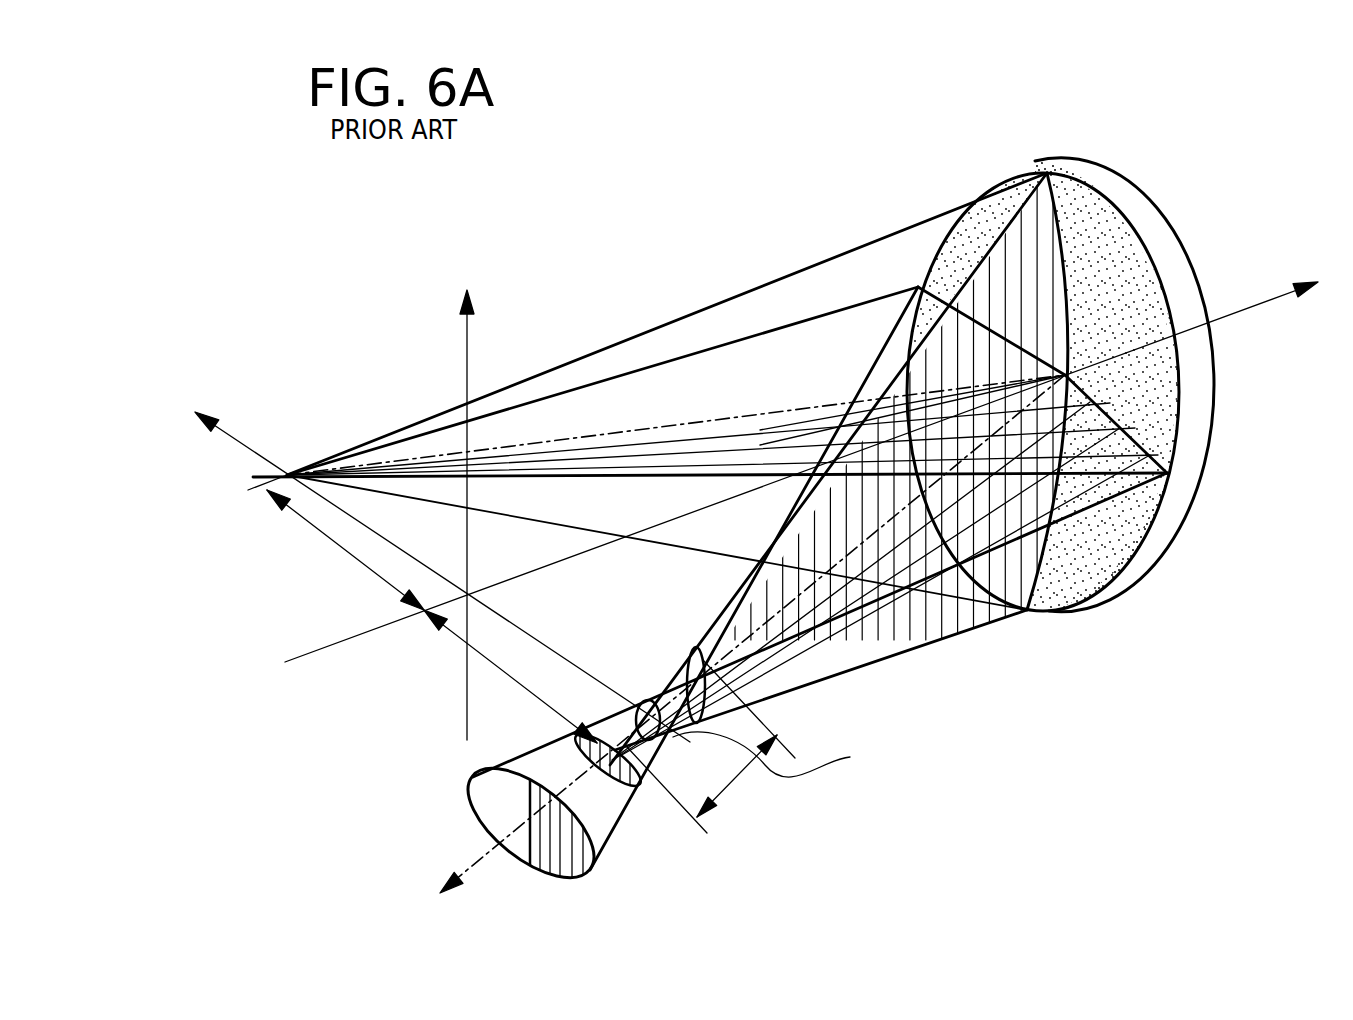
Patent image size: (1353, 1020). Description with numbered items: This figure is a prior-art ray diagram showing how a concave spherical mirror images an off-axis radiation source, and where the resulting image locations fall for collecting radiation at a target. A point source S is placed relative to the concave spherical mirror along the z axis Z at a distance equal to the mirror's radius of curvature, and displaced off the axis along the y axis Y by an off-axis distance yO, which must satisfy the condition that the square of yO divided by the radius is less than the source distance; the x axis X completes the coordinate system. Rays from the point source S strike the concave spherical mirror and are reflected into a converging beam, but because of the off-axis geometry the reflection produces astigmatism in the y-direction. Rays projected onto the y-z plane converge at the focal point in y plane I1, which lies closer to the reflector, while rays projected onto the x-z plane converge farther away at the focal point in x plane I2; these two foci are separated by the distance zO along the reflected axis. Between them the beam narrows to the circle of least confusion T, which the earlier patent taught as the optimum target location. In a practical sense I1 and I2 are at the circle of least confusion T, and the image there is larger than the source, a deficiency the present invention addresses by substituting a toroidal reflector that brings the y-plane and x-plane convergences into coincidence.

The point source S is at (666, 391).
The circle of least confusion T is at (859, 719).
The x axis X is at (490, 508).
The y axis Y is at (424, 577).
The z axis Z is at (814, 472).
The focal point in y plane I1 is at (878, 689).
The focal point in x plane I2 is at (748, 799).
The off-axis distance yO is at (432, 616).
The distance between focal points zO is at (711, 746).
The concave spherical mirror is at (1108, 407).